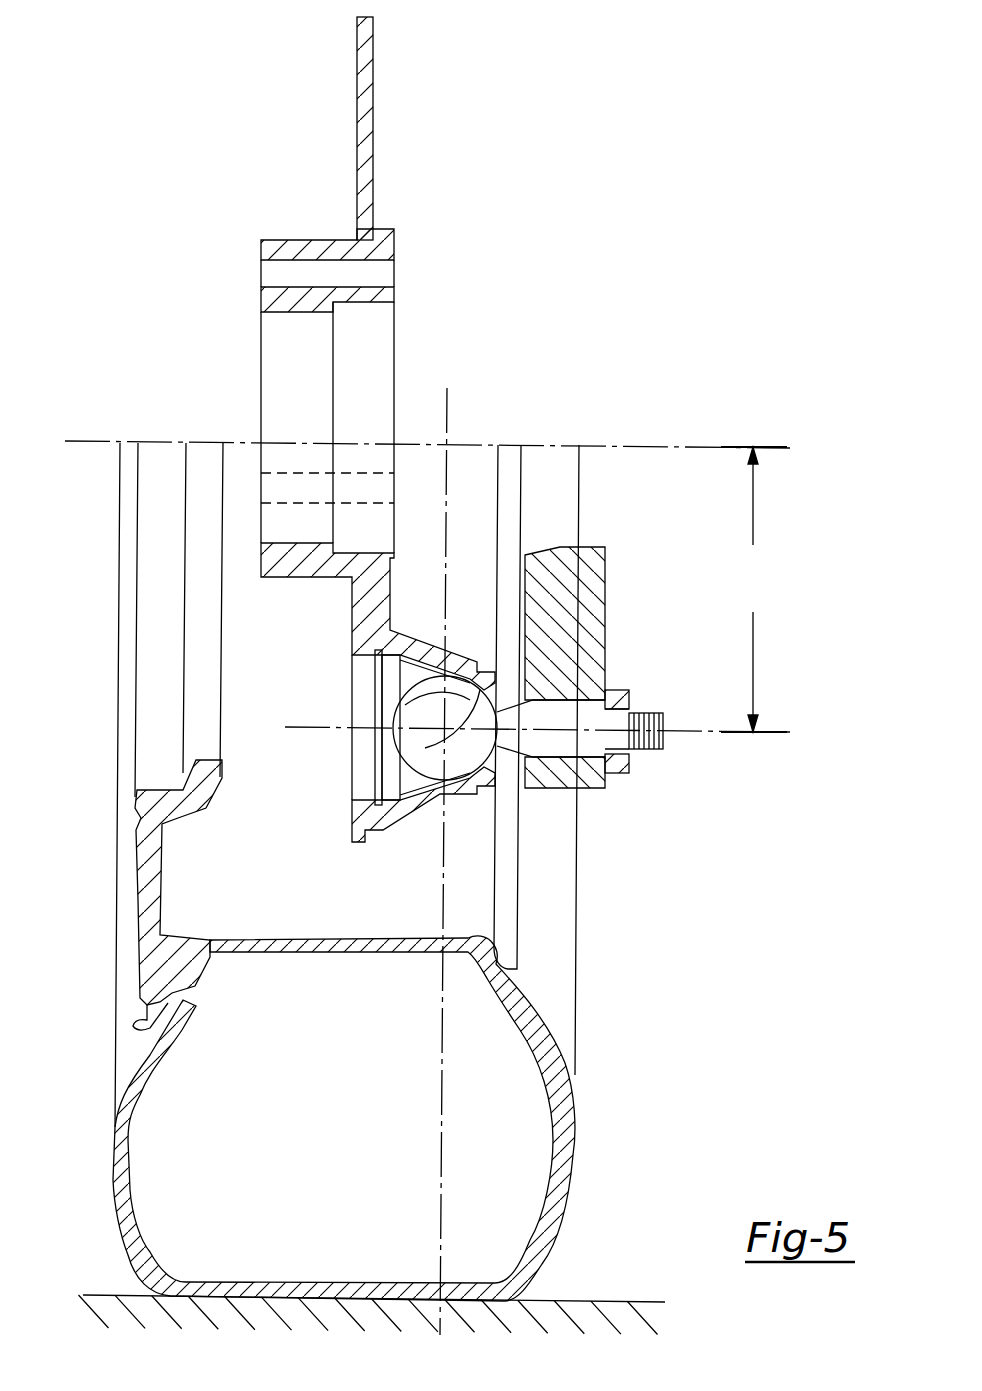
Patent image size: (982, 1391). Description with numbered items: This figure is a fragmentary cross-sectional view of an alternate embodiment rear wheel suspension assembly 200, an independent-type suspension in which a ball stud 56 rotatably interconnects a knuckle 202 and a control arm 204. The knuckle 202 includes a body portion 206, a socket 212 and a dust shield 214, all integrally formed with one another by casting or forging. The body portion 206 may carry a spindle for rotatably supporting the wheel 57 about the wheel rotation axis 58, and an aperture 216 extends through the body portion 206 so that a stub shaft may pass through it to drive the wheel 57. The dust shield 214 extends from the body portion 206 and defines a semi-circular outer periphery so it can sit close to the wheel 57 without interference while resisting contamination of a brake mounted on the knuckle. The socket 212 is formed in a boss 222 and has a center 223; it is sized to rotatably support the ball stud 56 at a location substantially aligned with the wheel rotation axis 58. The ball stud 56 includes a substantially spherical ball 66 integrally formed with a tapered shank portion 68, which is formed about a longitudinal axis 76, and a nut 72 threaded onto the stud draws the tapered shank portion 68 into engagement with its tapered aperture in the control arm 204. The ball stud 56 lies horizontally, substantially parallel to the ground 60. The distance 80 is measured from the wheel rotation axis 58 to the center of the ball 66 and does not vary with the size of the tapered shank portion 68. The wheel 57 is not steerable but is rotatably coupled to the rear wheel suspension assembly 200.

The rear wheel suspension assembly 200 is at (550, 332).
The knuckle 202 is at (469, 154).
The control arm 204 is at (600, 600).
The body portion 206 is at (302, 243).
The socket 212 is at (458, 686).
The dust shield 214 is at (369, 76).
The aperture 216 is at (364, 302).
The boss 222 is at (407, 812).
The center 223 is at (428, 738).
The ball stud 56 is at (565, 752).
The wheel 57 is at (297, 935).
The wheel rotation axis 58 is at (603, 445).
The ground 60 is at (97, 1293).
The ball 66 is at (448, 770).
The tapered shank portion 68 is at (585, 712).
The nut 72 is at (627, 758).
The longitudinal axis 76 is at (297, 740).
The distance 80 is at (754, 589).